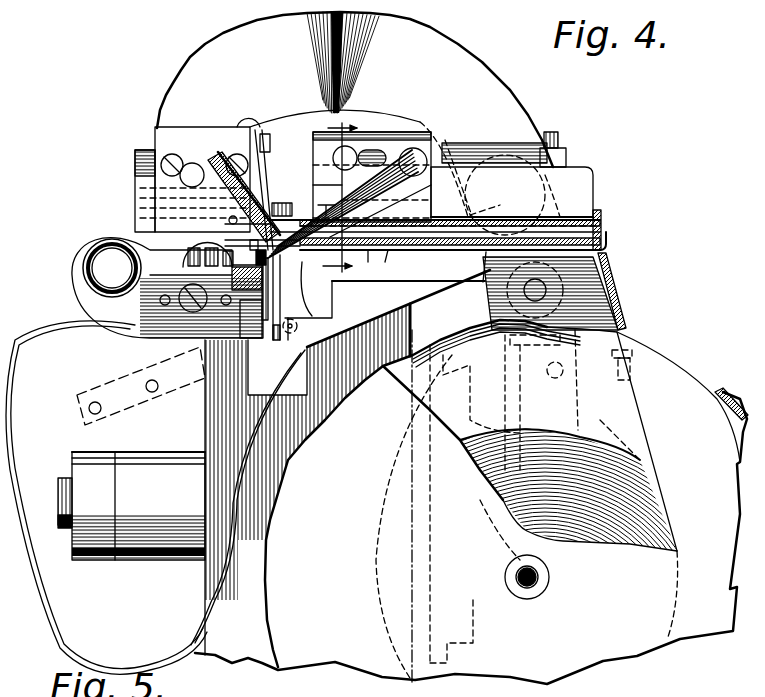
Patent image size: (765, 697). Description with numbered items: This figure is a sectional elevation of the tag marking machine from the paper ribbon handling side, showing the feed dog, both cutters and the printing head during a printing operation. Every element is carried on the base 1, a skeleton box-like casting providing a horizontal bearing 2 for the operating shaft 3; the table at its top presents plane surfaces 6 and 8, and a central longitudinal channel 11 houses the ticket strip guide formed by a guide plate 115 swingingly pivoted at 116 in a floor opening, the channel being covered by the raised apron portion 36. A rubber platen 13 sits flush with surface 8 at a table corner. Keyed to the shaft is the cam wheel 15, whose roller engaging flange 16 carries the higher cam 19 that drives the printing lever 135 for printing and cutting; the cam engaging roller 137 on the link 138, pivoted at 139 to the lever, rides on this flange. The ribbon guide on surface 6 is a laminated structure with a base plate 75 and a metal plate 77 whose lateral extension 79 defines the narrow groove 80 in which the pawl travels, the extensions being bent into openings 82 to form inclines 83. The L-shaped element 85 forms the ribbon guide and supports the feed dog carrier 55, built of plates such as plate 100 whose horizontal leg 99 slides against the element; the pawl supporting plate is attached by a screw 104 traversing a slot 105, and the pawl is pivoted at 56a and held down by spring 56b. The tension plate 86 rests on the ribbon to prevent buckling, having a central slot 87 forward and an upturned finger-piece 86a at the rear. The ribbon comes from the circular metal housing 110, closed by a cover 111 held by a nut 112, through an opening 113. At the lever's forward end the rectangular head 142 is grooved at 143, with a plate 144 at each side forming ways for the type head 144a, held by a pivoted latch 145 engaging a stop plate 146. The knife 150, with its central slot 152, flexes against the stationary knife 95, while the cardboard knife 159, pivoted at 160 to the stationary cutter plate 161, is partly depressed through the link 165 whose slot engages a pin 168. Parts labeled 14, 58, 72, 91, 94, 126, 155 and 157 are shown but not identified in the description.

The base 1 is at (207, 417).
The horizontal bearing 2 is at (110, 452).
The operating shaft 3 is at (335, 390).
The plane surface 6 is at (432, 252).
The plane surface 8 is at (251, 319).
The longitudinal channel 11 is at (335, 311).
The rubber platen 13 is at (295, 218).
The bearing arch 14 is at (185, 270).
The cam wheel 15 is at (450, 656).
The roller engaging flange 16 is at (445, 358).
The cam 19 is at (505, 545).
The raised apron portion 36 is at (312, 289).
The feed dog carrier 55 is at (388, 140).
The pawl pivot 56a is at (452, 160).
The spring 56b is at (467, 178).
The pivot pin 58 is at (413, 156).
The knob 72 is at (568, 152).
The base plate 75 is at (598, 248).
The metal plate 77 is at (505, 195).
The lateral extension 79 is at (375, 263).
The groove 80 is at (293, 297).
The openings 82 is at (392, 263).
The inclines 83 is at (380, 211).
The L-shaped element 85 is at (585, 205).
The tension plate 86 is at (558, 196).
The upturned finger-piece 86a is at (602, 218).
The slot 87 is at (343, 204).
The rail hatch strip 91 is at (450, 214).
The pawl 94 is at (325, 199).
The stationary knife 95 is at (278, 289).
The horizontal leg 99 is at (272, 239).
The L-shaped metal plate 100 is at (388, 209).
The screw 104 is at (330, 160).
The slot 105 is at (357, 150).
The circular metal housing 110 is at (575, 668).
The cover 111 is at (724, 405).
The nut 112 is at (552, 580).
The opening 113 is at (700, 386).
The guide plate 115 is at (297, 313).
The pivot 116 is at (290, 330).
The hidden arm 126 is at (500, 205).
The printing lever 135 is at (465, 56).
The cam engaging roller 137 is at (545, 514).
The link 138 is at (560, 410).
The pivot 139 is at (600, 275).
The rectangular head 142 is at (165, 133).
The grooves 143 is at (160, 188).
The plate 144 is at (160, 198).
The type head 144a is at (160, 218).
The pivoted latch 145 is at (138, 180).
The stop plate 146 is at (160, 208).
The knife 150 is at (265, 187).
The central slot 152 is at (282, 241).
The screw 155 is at (193, 163).
The pin 157 is at (243, 203).
The knife 159 is at (92, 250).
The pivot 160 is at (95, 272).
The stationary cutter plate 161 is at (118, 322).
The link 165 is at (240, 162).
The pin 168 is at (262, 210).